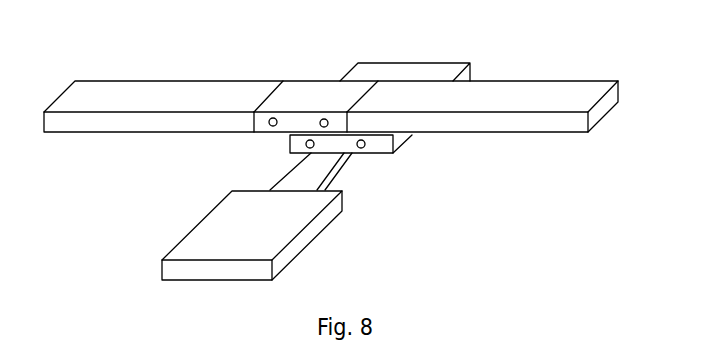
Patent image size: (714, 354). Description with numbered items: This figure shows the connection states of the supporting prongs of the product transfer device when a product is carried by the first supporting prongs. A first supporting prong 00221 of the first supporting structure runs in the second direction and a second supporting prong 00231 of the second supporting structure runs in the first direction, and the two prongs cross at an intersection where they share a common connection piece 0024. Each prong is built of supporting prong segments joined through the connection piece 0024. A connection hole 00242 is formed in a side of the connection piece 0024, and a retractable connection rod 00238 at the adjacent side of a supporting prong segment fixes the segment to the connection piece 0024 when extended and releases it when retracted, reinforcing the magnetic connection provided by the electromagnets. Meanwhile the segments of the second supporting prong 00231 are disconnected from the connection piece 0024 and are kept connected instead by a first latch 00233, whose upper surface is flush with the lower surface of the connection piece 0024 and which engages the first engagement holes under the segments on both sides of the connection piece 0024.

The first supporting prong 00221 is at (525, 120).
The connection piece 0024 is at (338, 127).
The connection hole 00242 is at (268, 126).
The retractable connection rod 00238 is at (305, 135).
The first latch 00233 is at (320, 161).
The second supporting prong 00231 is at (245, 241).